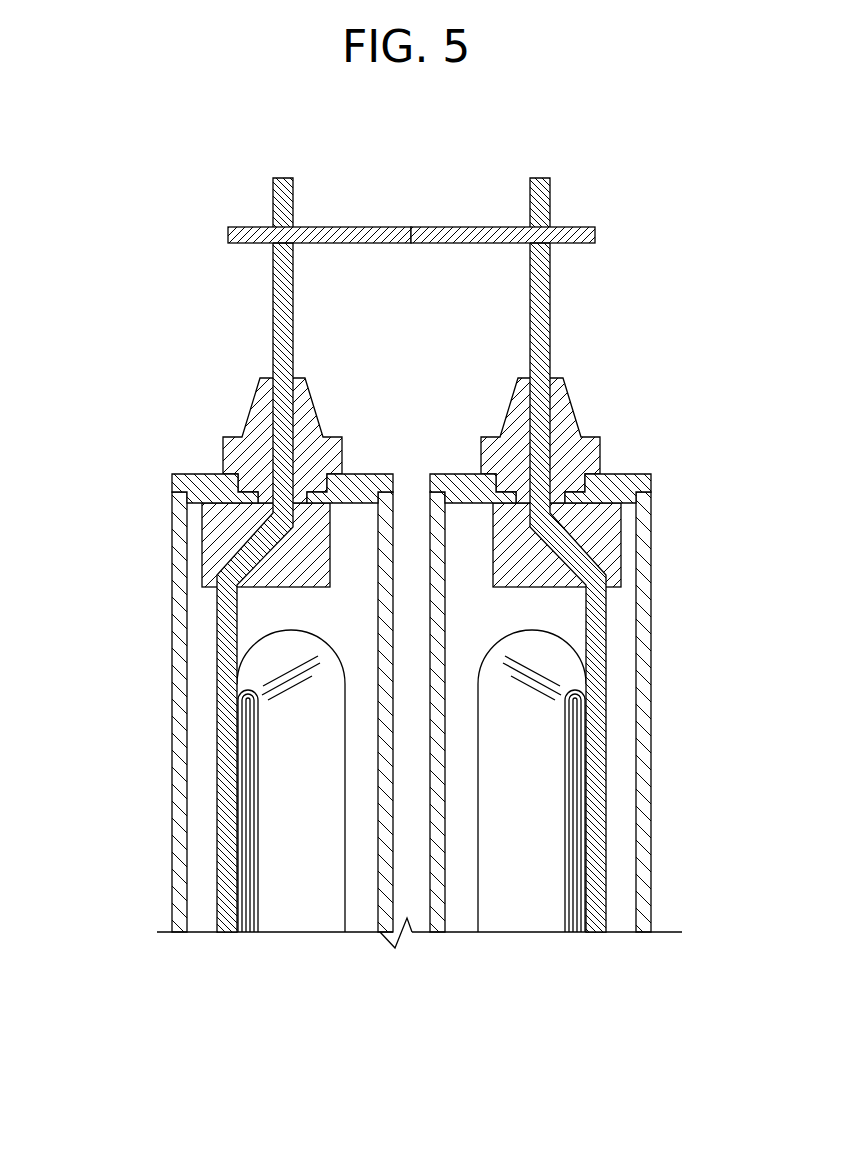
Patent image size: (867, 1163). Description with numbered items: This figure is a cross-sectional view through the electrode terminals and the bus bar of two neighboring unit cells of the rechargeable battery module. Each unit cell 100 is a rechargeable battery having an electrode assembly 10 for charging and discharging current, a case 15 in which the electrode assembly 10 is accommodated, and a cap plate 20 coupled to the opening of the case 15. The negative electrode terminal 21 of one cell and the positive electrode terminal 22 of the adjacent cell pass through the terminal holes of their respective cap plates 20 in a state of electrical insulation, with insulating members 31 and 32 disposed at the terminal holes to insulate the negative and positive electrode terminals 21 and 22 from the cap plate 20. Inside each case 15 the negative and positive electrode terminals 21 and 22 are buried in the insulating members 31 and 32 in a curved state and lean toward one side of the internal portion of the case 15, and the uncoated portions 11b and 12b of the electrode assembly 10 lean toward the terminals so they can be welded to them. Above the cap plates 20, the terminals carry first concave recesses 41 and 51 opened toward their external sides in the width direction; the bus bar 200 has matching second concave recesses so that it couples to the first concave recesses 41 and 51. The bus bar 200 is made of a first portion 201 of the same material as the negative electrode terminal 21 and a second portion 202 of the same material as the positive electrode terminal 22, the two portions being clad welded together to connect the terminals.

The unit cell 100 is at (132, 647).
The electrode assembly 10 is at (313, 880).
The uncoated portion 11b is at (565, 893).
The uncoated portion 12b is at (260, 893).
The case 15 is at (178, 753).
The cap plate 20 is at (187, 483).
The negative electrode terminal 21 is at (539, 185).
The positive electrode terminal 22 is at (285, 185).
The insulating member 31 is at (566, 435).
The insulating member 32 is at (257, 435).
The first concave recess 41 is at (535, 238).
The first concave recess 51 is at (288, 238).
The bus bar 200 is at (411, 191).
The first portion 201 is at (503, 213).
The second portion 202 is at (363, 227).